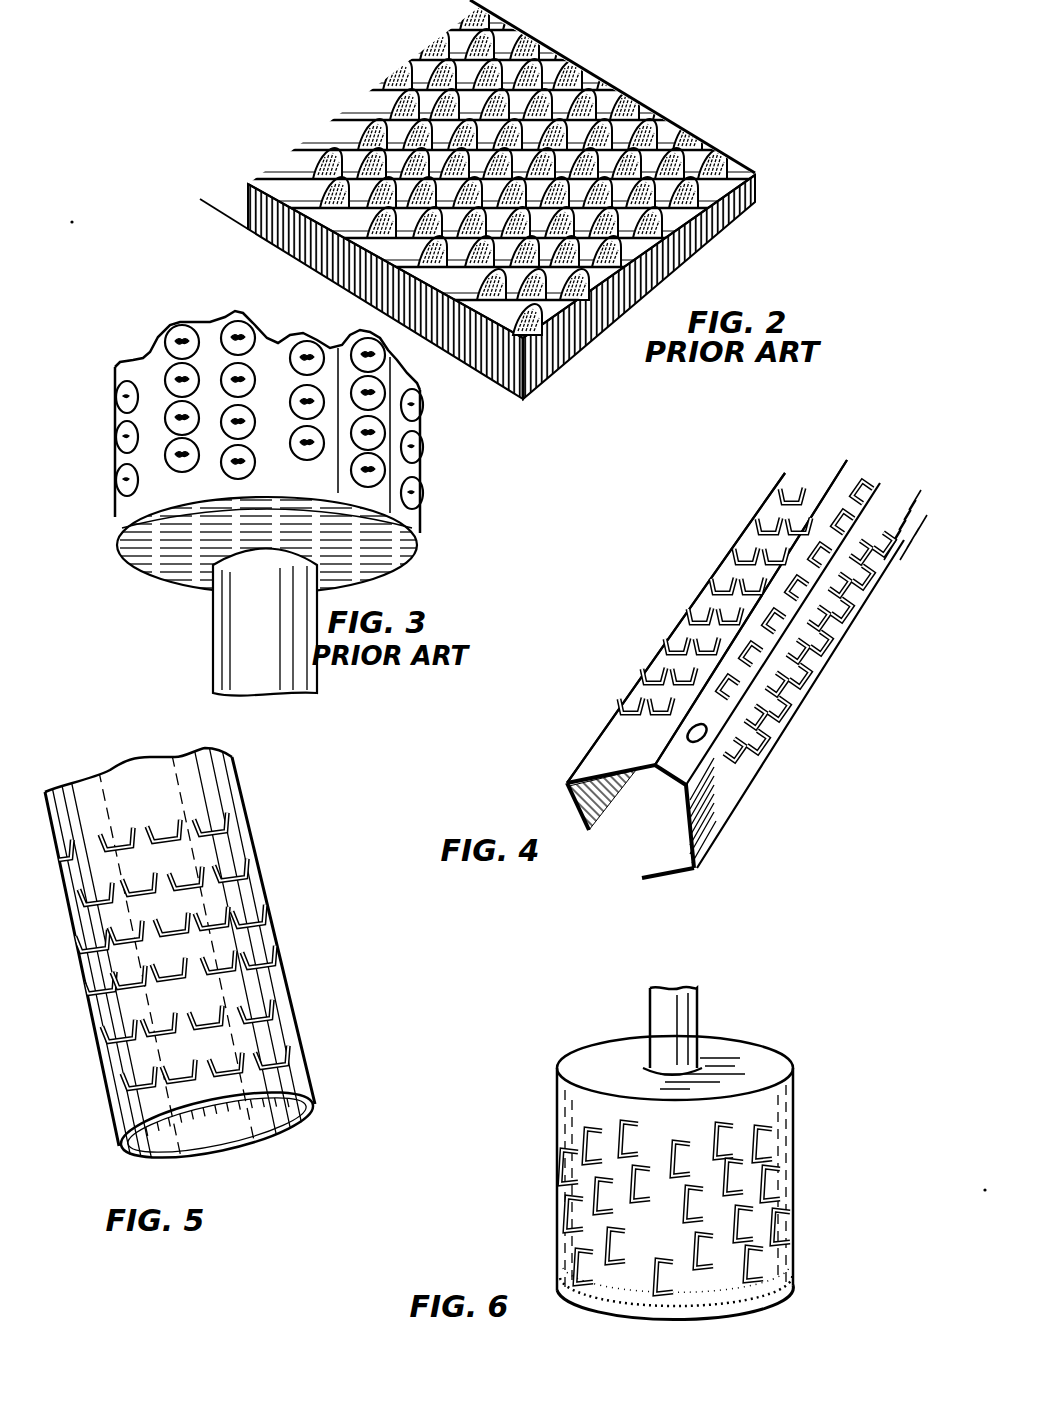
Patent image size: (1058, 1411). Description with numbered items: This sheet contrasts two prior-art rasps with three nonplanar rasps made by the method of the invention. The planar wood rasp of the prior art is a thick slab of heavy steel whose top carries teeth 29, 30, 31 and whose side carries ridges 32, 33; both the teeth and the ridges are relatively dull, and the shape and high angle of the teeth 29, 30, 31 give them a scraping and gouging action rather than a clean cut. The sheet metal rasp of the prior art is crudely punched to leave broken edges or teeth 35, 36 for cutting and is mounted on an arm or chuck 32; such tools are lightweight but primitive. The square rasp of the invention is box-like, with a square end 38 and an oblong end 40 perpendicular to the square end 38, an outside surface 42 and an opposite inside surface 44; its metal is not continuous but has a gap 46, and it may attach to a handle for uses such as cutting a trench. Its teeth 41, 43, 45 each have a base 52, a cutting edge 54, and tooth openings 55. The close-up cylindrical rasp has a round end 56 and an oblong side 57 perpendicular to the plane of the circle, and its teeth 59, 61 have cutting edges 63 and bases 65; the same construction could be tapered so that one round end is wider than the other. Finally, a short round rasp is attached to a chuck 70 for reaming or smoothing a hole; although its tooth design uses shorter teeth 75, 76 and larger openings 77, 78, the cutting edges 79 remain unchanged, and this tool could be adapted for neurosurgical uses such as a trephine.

In FIG. 2, the tooth 29 is at (547, 43).
In FIG. 2, the tooth 30 is at (560, 147).
In FIG. 2, the tooth 31 is at (729, 154).
In FIG. 2, the ridge / arm or chuck 32 is at (615, 83).
In FIG. 3, the ridge / arm or chuck 32 is at (213, 624).
In FIG. 2, the ridge 33 is at (318, 272).
In FIG. 3, the broken edge or tooth 35 is at (120, 480).
In FIG. 3, the broken edge or tooth 36 is at (310, 397).
In FIG. 4, the square end 38 is at (557, 783).
In FIG. 4, the oblong end 40 is at (865, 635).
In FIG. 4, the tooth 41 is at (760, 510).
In FIG. 4, the outside surface 42 is at (612, 737).
In FIG. 4, the tooth 43 is at (838, 508).
In FIG. 4, the inside surface 44 is at (673, 850).
In FIG. 4, the tooth 45 is at (758, 770).
In FIG. 4, the gap 46 is at (618, 833).
In FIG. 4, the base 52 is at (678, 636).
In FIG. 4, the cutting edge 54 is at (656, 666).
In FIG. 4, the tooth openings 55 is at (660, 653).
In FIG. 5, the round end 56 is at (240, 1153).
In FIG. 5, the oblong side 57 is at (77, 990).
In FIG. 5, the tooth 59 is at (187, 870).
In FIG. 5, the tooth 61 is at (105, 1053).
In FIG. 5, the cutting edge 63 is at (237, 970).
In FIG. 5, the base 65 is at (217, 960).
In FIG. 6, the chuck 70 is at (700, 1007).
In FIG. 6, the tooth 75 is at (630, 1192).
In FIG. 6, the tooth 76 is at (568, 1208).
In FIG. 6, the opening 77 is at (650, 1268).
In FIG. 6, the opening 78 is at (745, 1252).
In FIG. 6, the cutting edge 79 is at (740, 1182).